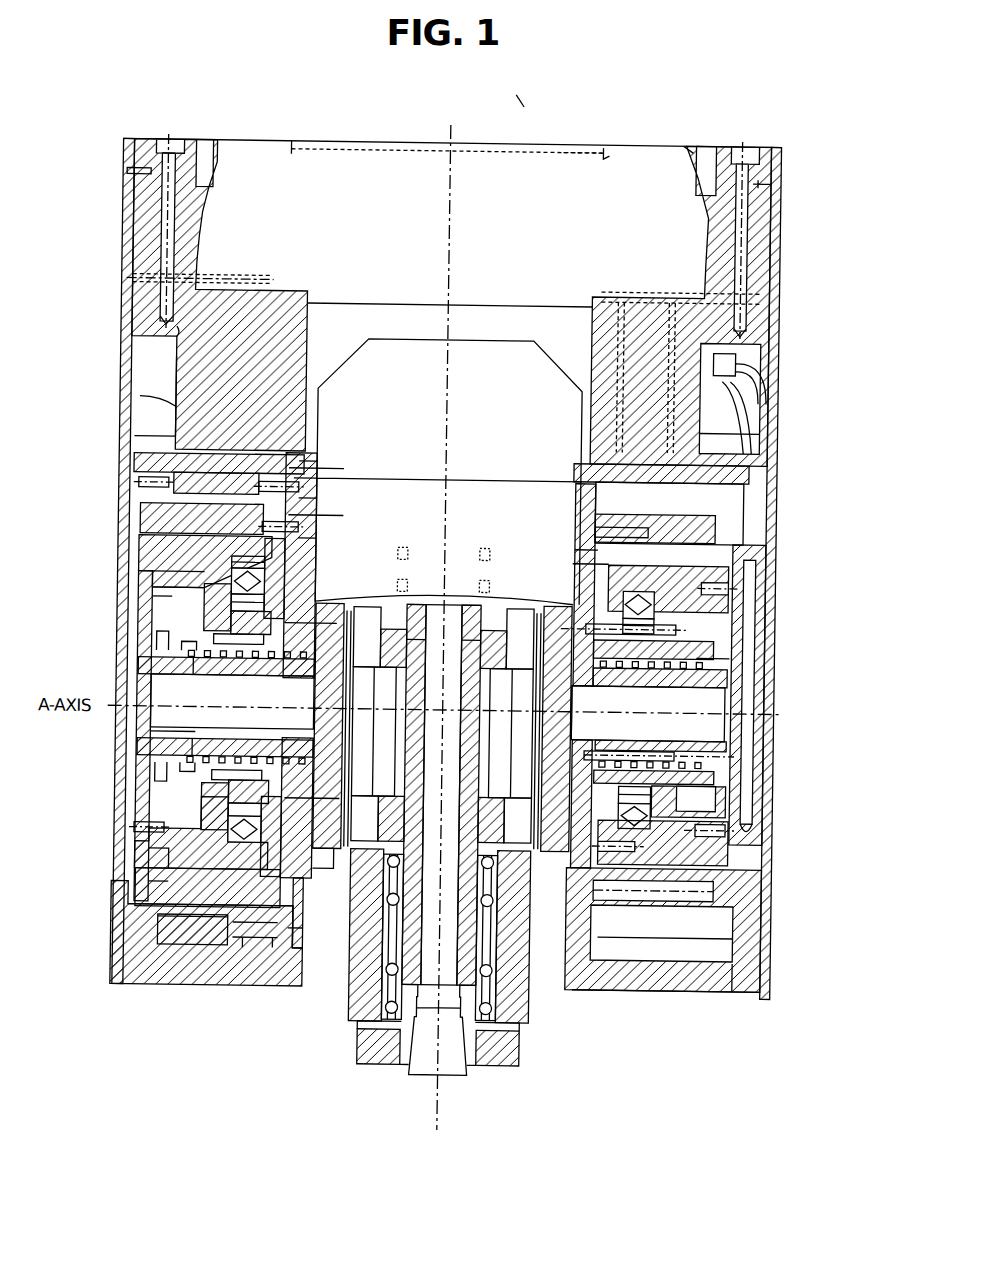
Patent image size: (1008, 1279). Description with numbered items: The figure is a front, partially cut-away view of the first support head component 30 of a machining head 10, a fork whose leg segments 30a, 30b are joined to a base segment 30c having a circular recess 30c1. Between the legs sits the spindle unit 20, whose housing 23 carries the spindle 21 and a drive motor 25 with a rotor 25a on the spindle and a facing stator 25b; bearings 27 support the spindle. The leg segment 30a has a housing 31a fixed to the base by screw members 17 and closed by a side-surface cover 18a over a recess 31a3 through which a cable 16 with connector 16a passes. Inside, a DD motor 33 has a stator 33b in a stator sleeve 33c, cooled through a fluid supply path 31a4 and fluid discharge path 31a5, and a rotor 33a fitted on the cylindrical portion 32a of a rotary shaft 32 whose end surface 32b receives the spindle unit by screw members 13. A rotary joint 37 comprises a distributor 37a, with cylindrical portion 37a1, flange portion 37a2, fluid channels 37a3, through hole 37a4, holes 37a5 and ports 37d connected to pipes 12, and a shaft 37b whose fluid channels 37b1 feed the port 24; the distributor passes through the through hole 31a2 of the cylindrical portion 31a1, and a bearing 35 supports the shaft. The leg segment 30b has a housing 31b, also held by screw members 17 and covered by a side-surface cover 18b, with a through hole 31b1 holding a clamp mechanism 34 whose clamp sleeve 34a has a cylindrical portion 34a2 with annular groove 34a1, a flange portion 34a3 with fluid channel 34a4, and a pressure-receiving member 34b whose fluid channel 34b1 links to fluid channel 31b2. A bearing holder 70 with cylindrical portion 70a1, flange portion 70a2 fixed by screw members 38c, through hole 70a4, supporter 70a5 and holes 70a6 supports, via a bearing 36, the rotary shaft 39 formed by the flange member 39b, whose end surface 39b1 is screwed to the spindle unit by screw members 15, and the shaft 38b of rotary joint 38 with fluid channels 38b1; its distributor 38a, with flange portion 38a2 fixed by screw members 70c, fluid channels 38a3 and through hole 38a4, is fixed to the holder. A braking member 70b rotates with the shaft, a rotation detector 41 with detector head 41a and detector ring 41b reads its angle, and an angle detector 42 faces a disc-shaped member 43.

The machining head 10 is at (517, 99).
The fluid supply or discharge pipe 12 is at (768, 345).
The screw members 13 is at (575, 562).
The screw members 15 is at (334, 870).
The cable 16 is at (766, 380).
The connector 16a is at (750, 450).
The screw members 17 is at (163, 143).
The side-surface cover 18a is at (778, 240).
The side-surface cover 18b is at (120, 235).
The spindle unit 20 is at (554, 338).
The spindle 21 is at (492, 1065).
The housing 23 is at (440, 740).
The fluid supply or discharge port 24 is at (370, 630).
The drive motor 25 is at (446, 872).
The rotor 25a is at (432, 660).
The stator 25b is at (400, 552).
The bearings 27 is at (390, 900).
The first support head component 30 is at (718, 88).
The leg segment 30a is at (630, 1056).
The leg segment 30b is at (220, 1076).
The base segment 30c is at (240, 160).
The circular recess 30c1 is at (600, 148).
The housing 31a is at (775, 950).
The cylindrical portion 31a1 is at (745, 505).
The through hole 31a2 is at (731, 580).
The recess 31a3 is at (755, 428).
The fluid supply path 31a4 is at (620, 300).
The fluid discharge path 31a5 is at (671, 300).
The housing 31b is at (135, 988).
The through hole 31b1 is at (176, 380).
The fluid channel 31b2 is at (282, 952).
The rotary shaft 32 is at (597, 530).
The cylindrical portion 32a is at (620, 512).
The end surface 32b is at (577, 548).
The DD motor 33 is at (740, 890).
The rotor 33a is at (750, 472).
The stator 33b is at (740, 940).
The stator sleeve 33c is at (745, 990).
The clamp mechanism 34 is at (352, 438).
The clamp sleeve 34a is at (135, 467).
The annular groove 34a1 is at (140, 400).
The cylindrical portion 34a2 is at (318, 484).
The flange portion 34a3 is at (318, 450).
The fluid channel 34a4 is at (302, 935).
The pressure-receiving member 34b is at (176, 345).
The fluid channel 34b1 is at (252, 952).
The bearing 35 is at (520, 920).
The bearing 36 is at (332, 610).
The rotary joint 37 is at (768, 670).
The distributor 37a is at (797, 648).
The cylindrical portion 37a1 is at (655, 680).
The flange portion 37a2 is at (734, 830).
The fluid channels 37a3 is at (660, 692).
The through hole 37a4 is at (730, 660).
The holes 37a5 is at (700, 612).
The shaft 37b is at (600, 600).
The fluid channels 37b1 is at (731, 790).
The fluid supply or discharge ports 37d is at (758, 730).
The rotary joint 38 is at (82, 806).
The distributor 38a is at (234, 625).
The flange portion 38a2 is at (140, 831).
The fluid channels 38a3 is at (235, 678).
The through hole 38a4 is at (300, 738).
The shaft 38b is at (160, 738).
The fluid channels 38b1 is at (280, 666).
The screw members 38c is at (135, 440).
The rotary shaft 39 is at (160, 778).
The flange member 39b is at (318, 560).
The end surface 39b1 is at (325, 570).
The rotation detector 41 is at (64, 622).
The detector head 41a is at (175, 630).
The detector ring 41b is at (207, 636).
The angle detector 42 is at (207, 795).
The disc-shaped member 43 is at (217, 778).
The bearing holder 70 is at (142, 520).
The cylindrical portion 70a1 is at (142, 545).
The flange portion 70a2 is at (140, 486).
The through hole 70a4 is at (155, 578).
The supporter 70a5 is at (155, 595).
The holes 70a6 is at (155, 887).
The braking member 70b is at (142, 895).
The screw members 70c is at (155, 858).